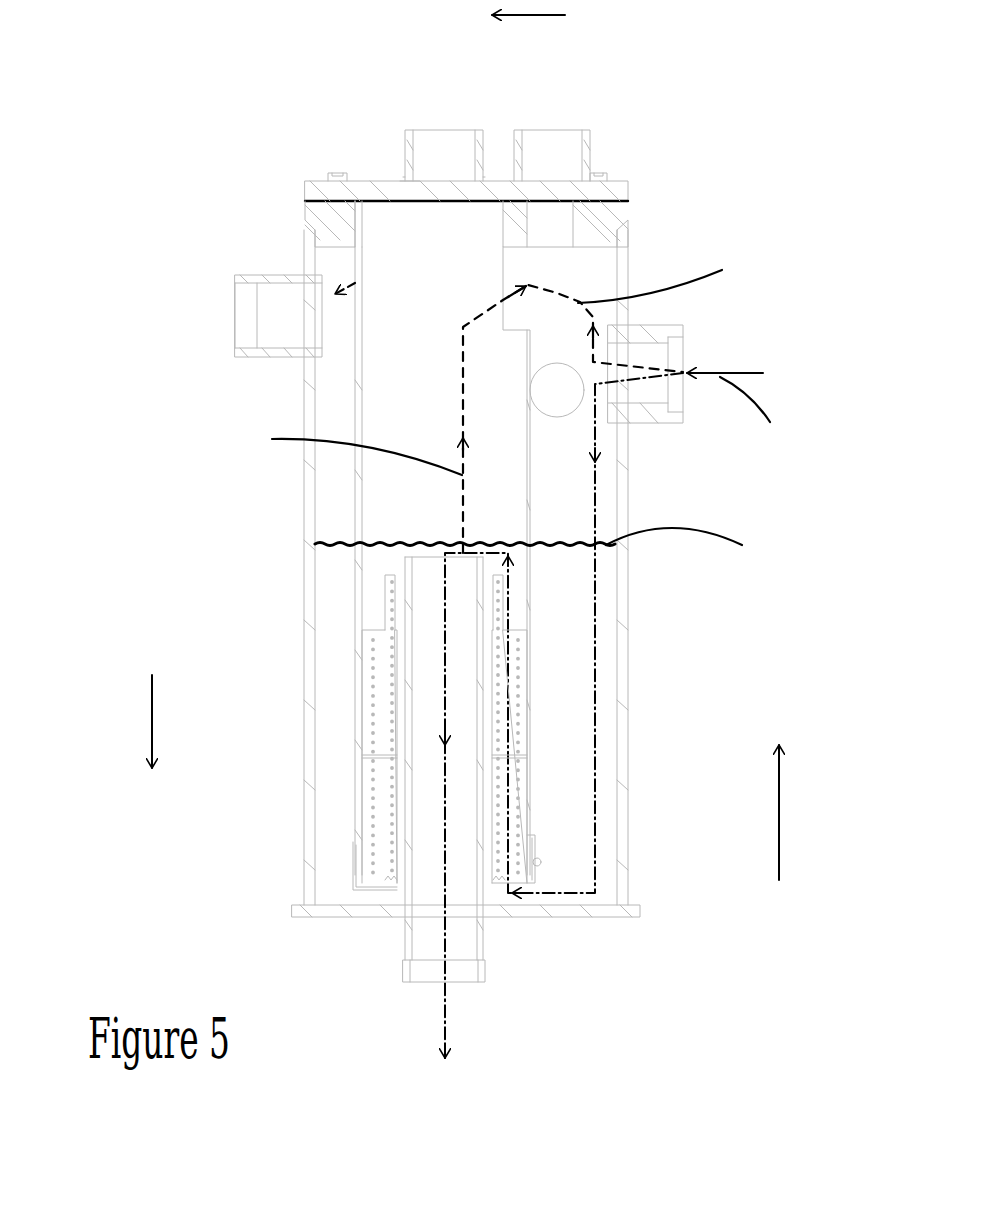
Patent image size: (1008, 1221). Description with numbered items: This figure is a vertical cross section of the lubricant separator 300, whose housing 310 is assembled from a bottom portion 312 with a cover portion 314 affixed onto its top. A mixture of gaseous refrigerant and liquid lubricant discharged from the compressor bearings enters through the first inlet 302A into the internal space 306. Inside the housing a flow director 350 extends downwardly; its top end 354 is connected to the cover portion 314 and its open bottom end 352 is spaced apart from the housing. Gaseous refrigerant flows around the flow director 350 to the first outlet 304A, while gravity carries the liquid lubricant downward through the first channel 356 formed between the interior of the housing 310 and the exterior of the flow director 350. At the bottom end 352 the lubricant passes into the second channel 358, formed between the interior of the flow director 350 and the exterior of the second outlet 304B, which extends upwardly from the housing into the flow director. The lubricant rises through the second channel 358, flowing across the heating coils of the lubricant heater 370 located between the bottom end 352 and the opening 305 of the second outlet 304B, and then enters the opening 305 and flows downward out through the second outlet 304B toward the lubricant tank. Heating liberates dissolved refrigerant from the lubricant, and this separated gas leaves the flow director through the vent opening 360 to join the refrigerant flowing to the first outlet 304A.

The lubricant separator 300 is at (218, 72).
The housing 310 is at (119, 170).
The cover portion 314 is at (303, 183).
The bottom portion 312 is at (305, 262).
The first outlet 304A is at (235, 292).
The flow director 350 is at (358, 370).
The top end 354 is at (360, 225).
The internal space 306 is at (503, 262).
The vent opening 360 is at (508, 283).
The first inlet 302A is at (685, 345).
The first channel 356 is at (606, 506).
The opening 305 is at (438, 555).
The second channel 358 is at (375, 603).
The lubricant heater 370 is at (380, 632).
The bottom end 352 is at (358, 860).
The second outlet 304B is at (468, 982).